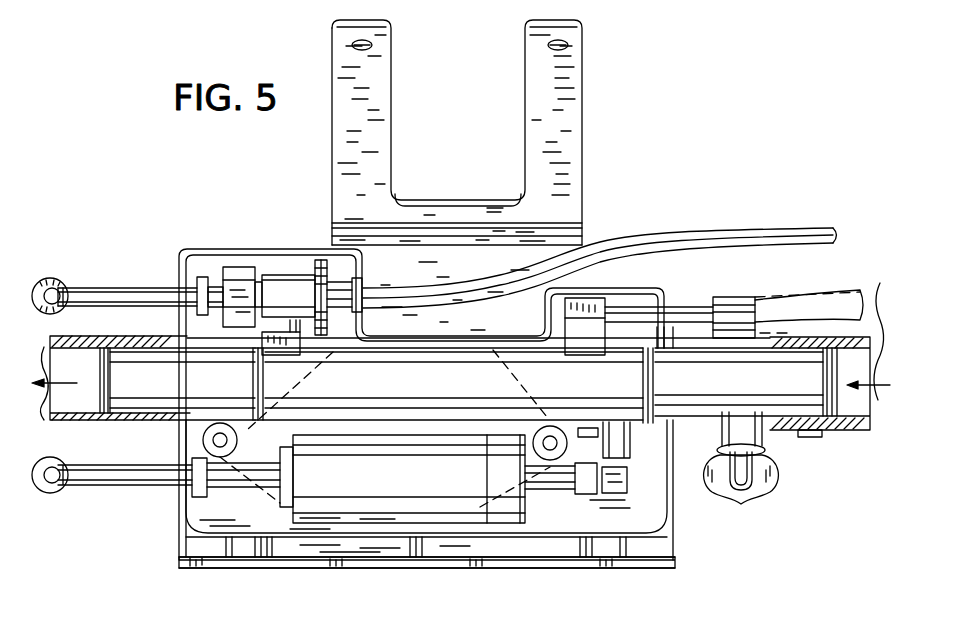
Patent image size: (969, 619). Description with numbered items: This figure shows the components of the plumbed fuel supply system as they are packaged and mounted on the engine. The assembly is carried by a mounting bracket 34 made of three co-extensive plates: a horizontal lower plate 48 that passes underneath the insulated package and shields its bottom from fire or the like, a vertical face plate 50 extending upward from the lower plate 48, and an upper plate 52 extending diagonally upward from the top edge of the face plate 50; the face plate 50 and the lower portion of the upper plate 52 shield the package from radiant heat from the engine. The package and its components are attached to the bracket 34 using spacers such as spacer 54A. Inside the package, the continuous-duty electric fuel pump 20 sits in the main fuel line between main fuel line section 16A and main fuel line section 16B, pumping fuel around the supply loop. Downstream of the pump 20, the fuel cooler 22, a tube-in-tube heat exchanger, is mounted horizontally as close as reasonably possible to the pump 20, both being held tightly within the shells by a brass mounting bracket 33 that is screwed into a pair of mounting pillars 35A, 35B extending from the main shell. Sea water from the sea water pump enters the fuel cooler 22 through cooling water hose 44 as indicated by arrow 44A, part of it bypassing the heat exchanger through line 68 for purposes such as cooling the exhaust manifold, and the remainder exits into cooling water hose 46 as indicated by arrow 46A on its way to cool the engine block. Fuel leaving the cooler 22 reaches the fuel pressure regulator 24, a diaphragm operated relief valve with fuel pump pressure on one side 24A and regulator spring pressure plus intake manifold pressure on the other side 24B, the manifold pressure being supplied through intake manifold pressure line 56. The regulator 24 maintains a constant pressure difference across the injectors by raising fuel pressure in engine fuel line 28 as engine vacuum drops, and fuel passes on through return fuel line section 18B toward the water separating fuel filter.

The mounting bracket 34 is at (386, 101).
The upper plate 52 is at (578, 205).
The vertical face plate 50 is at (340, 247).
The horizontal lower plate 48 is at (645, 567).
The spacer 54A is at (243, 550).
The cooling water hose 44 is at (852, 434).
The arrow indicating cooling water inflow 44A is at (870, 328).
The arrow indicating cooling water outflow 46A is at (58, 348).
The cooling water hose 46 is at (50, 320).
The return fuel line section 18B is at (123, 288).
The fuel pressure regulator 24 is at (263, 262).
The fuel pump pressure side of the pressure regulator 24A is at (303, 258).
The spring and intake manifold pressure side of the pressure regulator 24B is at (372, 273).
The intake manifold pressure line 56 is at (656, 237).
The engine fuel line 28 is at (763, 310).
The fuel cooler 22 is at (663, 422).
The bypass line 68 is at (751, 480).
The brass mounting bracket 33 is at (508, 360).
The mounting pillar 35B is at (232, 432).
The mounting pillar 35A is at (548, 433).
The main fuel line section 16A is at (92, 490).
The electric fuel pump 20 is at (483, 514).
The main fuel line section 16B is at (551, 489).